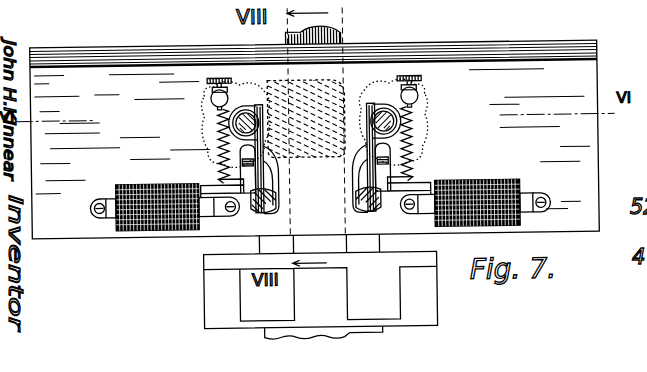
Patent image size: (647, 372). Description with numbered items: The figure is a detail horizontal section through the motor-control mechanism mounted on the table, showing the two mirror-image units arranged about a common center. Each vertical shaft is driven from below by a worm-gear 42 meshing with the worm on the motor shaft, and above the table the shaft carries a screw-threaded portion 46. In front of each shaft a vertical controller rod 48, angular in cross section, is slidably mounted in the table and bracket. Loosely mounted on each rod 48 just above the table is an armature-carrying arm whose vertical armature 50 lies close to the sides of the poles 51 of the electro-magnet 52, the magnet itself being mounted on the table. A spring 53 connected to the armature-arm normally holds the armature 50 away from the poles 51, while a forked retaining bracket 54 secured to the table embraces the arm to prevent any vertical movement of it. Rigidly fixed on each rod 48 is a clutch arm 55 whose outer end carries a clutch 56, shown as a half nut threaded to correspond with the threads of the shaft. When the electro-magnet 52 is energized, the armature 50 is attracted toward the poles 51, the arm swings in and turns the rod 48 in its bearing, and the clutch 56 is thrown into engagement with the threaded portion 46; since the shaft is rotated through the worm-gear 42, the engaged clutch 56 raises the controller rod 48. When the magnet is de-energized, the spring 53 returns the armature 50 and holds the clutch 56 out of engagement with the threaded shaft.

The worm-gear 42 is at (257, 90).
The screw-threaded portion 46 is at (393, 112).
The controller rod 48 is at (262, 204).
The armature 50 is at (208, 184).
The poles 51 is at (211, 215).
The electro-magnet 52 is at (137, 182).
The spring 53 is at (217, 131).
The forked retaining bracket 54 is at (278, 176).
The clutch arm 55 is at (362, 167).
The clutch 56 is at (365, 111).